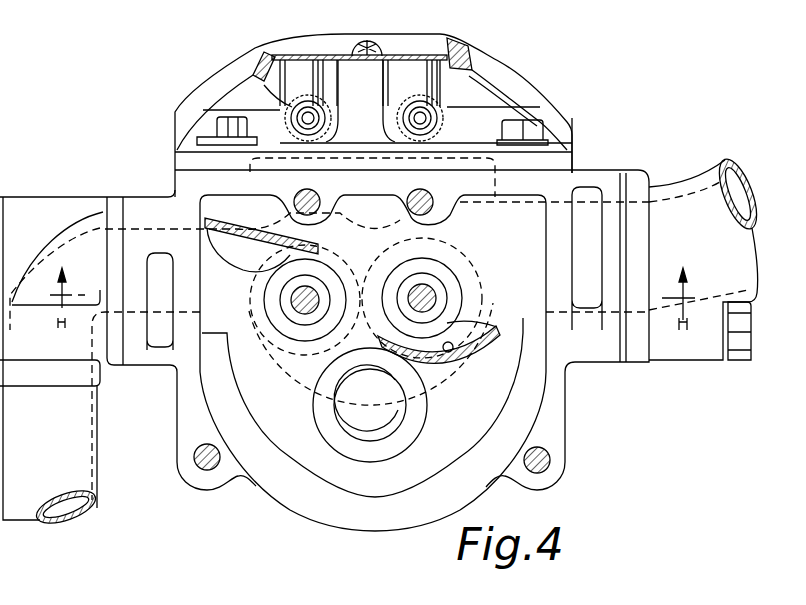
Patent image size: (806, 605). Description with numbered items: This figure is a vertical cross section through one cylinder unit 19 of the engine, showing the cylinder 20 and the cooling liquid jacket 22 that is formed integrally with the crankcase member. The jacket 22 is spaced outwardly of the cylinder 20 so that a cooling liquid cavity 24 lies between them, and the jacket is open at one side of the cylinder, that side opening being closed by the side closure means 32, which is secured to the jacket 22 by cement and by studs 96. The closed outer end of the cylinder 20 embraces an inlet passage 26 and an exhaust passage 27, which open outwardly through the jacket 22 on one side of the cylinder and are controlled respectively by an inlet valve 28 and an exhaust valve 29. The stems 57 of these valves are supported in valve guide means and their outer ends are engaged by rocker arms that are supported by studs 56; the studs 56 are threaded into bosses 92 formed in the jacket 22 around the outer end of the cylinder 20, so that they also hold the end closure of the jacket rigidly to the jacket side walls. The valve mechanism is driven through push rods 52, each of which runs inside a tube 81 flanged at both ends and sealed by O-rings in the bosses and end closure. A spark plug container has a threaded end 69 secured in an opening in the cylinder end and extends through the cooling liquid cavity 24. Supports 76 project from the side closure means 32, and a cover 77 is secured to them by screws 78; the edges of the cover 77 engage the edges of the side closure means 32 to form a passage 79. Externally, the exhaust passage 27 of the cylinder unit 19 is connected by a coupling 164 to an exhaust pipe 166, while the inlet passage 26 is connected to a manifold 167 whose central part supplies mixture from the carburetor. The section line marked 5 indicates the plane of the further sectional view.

The section line 5- 5 is at (372, 280).
The cylinder unit 19 is at (166, 157).
The cylinder 20 is at (297, 448).
The cooling liquid jacket 22 is at (334, 518).
The cooling liquid cavity 24 is at (400, 497).
The inlet passage 26 is at (508, 205).
The exhaust passage 27 is at (243, 268).
The inlet valve 28 is at (477, 255).
The exhaust valve 29 is at (272, 305).
The side closure means 32 is at (560, 157).
The push rod 52 is at (306, 119).
The stud 56 is at (292, 204).
The valve stem 57 is at (305, 308).
The threaded end 69 is at (402, 402).
The support 76 is at (386, 86).
The cover 77 is at (517, 75).
The screw 78 is at (362, 52).
The passage 79 is at (243, 104).
The tube 81 is at (258, 75).
The boss 92 is at (372, 202).
The stud 96 is at (212, 125).
The coupling 164 is at (38, 217).
The exhaust pipe 166 is at (78, 463).
The manifold 167 is at (673, 187).